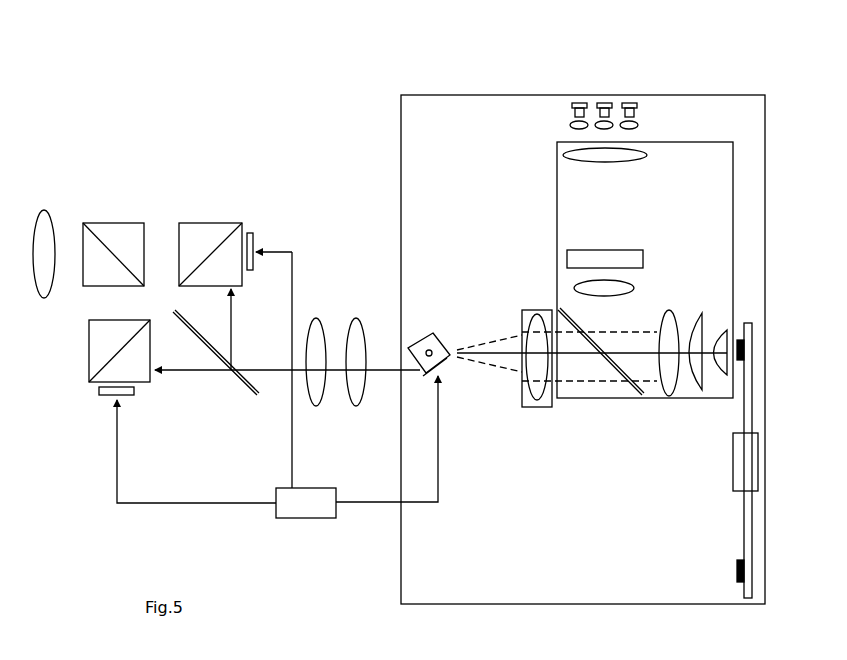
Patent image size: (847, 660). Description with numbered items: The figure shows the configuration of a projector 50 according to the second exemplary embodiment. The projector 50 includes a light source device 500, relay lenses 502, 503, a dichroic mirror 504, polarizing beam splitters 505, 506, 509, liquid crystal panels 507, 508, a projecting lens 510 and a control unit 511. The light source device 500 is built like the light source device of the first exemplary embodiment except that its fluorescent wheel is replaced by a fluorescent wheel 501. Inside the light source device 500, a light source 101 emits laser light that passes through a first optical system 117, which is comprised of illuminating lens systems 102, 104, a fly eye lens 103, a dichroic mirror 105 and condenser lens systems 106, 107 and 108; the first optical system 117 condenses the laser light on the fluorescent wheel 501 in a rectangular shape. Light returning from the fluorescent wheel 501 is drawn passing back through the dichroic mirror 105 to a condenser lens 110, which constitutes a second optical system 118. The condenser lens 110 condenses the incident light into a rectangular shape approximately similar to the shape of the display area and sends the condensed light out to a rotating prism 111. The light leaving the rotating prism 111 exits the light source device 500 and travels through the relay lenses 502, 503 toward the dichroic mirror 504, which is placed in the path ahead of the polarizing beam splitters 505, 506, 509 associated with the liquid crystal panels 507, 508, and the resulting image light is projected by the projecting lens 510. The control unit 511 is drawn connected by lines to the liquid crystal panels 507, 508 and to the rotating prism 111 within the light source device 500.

The projector 50 is at (553, 50).
The light source device 500 is at (585, 604).
The fluorescent wheel 501 is at (758, 462).
The relay lens 502 is at (358, 318).
The relay lens 503 is at (320, 318).
The dichroic mirror 504 is at (250, 398).
The polarizing beam splitter 505 is at (89, 352).
The polarizing beam splitter 506 is at (210, 223).
The liquid crystal panel 507 is at (99, 391).
The liquid crystal panel 508 is at (254, 233).
The polarizing beam splitter 509 is at (118, 223).
The projecting lens 510 is at (46, 211).
The control unit 511 is at (307, 518).
The light source 101 is at (648, 117).
The illuminating lens system 102 is at (647, 156).
The fly eye lens 103 is at (643, 260).
The illuminating lens system 104 is at (574, 286).
The dichroic mirror 105 is at (556, 311).
The condenser lens system 106 is at (667, 393).
The condenser lens system 107 is at (696, 390).
The condenser lens system 108 is at (714, 329).
The condenser lens 110 is at (540, 403).
The rotating prism 111 is at (436, 330).
The first optical system 117 is at (733, 270).
The second optical system 118 is at (527, 407).